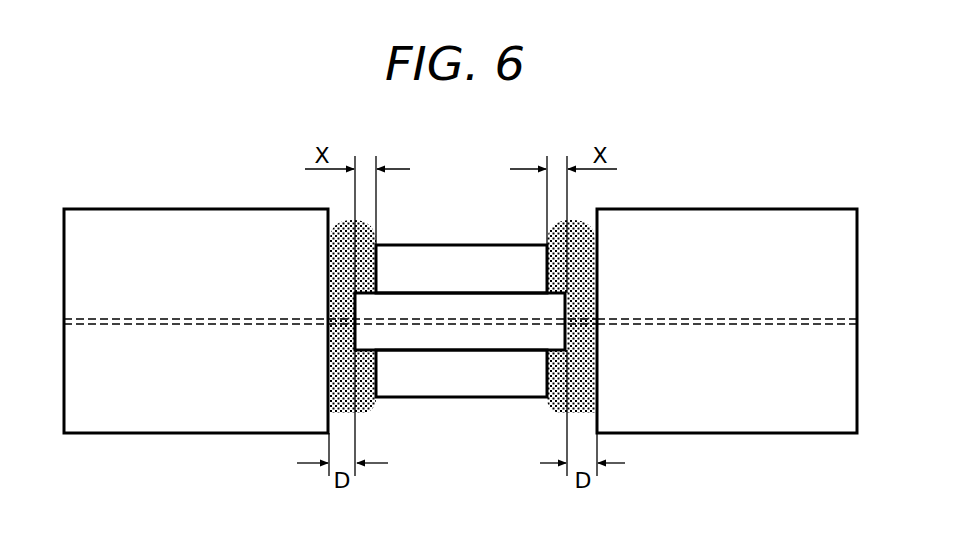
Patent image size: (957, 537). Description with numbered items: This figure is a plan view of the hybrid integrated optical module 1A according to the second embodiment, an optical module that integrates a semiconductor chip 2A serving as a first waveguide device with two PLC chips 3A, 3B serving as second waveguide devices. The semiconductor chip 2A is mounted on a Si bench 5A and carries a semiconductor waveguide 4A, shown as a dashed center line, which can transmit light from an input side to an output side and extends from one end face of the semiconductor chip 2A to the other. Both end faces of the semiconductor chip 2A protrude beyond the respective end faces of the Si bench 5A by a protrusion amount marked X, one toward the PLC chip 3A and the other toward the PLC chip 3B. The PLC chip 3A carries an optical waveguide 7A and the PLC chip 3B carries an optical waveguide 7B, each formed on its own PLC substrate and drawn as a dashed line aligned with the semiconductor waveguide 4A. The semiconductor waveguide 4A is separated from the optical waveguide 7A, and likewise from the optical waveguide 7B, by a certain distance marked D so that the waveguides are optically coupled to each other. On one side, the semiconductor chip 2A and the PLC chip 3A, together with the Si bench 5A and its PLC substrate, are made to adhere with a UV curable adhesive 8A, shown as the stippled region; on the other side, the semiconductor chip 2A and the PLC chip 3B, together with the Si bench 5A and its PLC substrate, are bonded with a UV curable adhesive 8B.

The hybrid integrated optical module 1A is at (462, 283).
The semiconductor chip 2A is at (480, 360).
The PLC chip 3A is at (774, 203).
The PLC chip 3B is at (136, 204).
The semiconductor waveguide 4A is at (407, 325).
The Si bench 5A is at (452, 394).
The optical waveguide 7A is at (775, 325).
The optical waveguide 7B is at (178, 325).
The UV curable adhesive 8A is at (590, 262).
The UV curable adhesive 8B is at (335, 262).